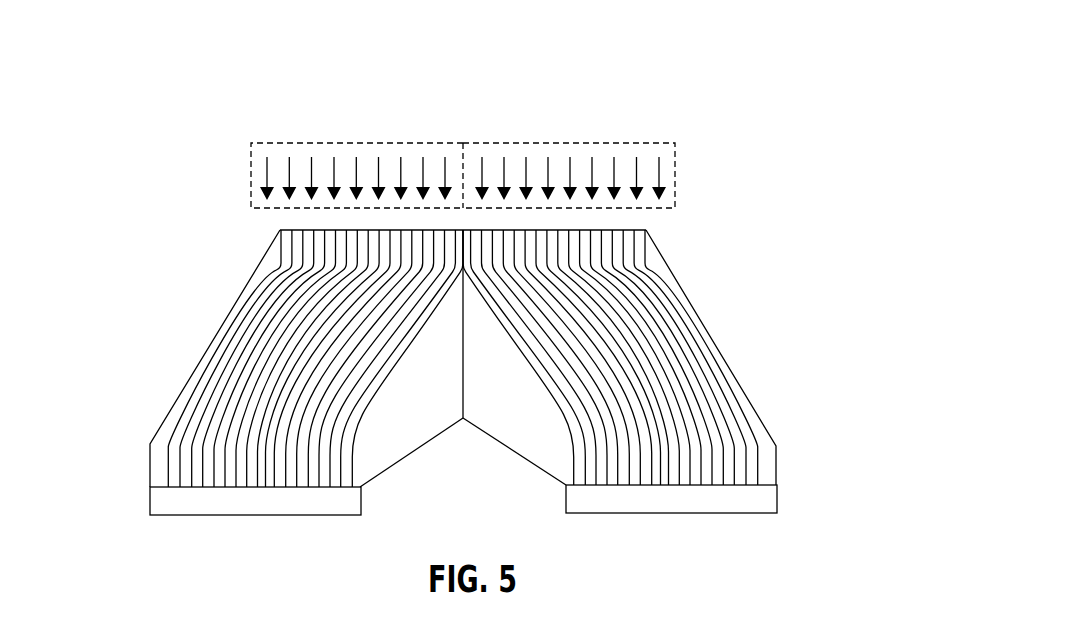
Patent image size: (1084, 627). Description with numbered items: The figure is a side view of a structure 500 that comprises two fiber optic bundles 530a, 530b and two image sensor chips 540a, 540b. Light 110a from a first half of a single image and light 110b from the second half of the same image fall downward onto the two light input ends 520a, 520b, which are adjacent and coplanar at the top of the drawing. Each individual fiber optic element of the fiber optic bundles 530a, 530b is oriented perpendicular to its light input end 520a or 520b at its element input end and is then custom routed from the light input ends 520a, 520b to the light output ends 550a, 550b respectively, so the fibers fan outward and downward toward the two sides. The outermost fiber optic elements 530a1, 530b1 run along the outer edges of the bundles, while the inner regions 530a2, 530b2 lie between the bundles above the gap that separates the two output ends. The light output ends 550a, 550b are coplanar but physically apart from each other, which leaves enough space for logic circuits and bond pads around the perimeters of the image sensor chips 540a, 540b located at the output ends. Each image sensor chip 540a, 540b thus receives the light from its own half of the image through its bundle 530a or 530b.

The structure 500 is at (719, 70).
The light 110a is at (280, 143).
The light 110b is at (646, 143).
The light input end 520a is at (280, 229).
The light input end 520b is at (646, 229).
The fiber optic bundle 530a is at (232, 307).
The fiber optic bundle 530b is at (694, 307).
The outer optical fiber of first array 530a1 is at (208, 377).
The outer optical fiber of second array 530b1 is at (718, 377).
The inner region of first array 530a2 is at (448, 412).
The inner region of second array 530b2 is at (537, 412).
The image sensor chip 540a is at (150, 502).
The image sensor chip 540b is at (777, 501).
The light output end 550a is at (266, 487).
The light output end 550b is at (663, 485).